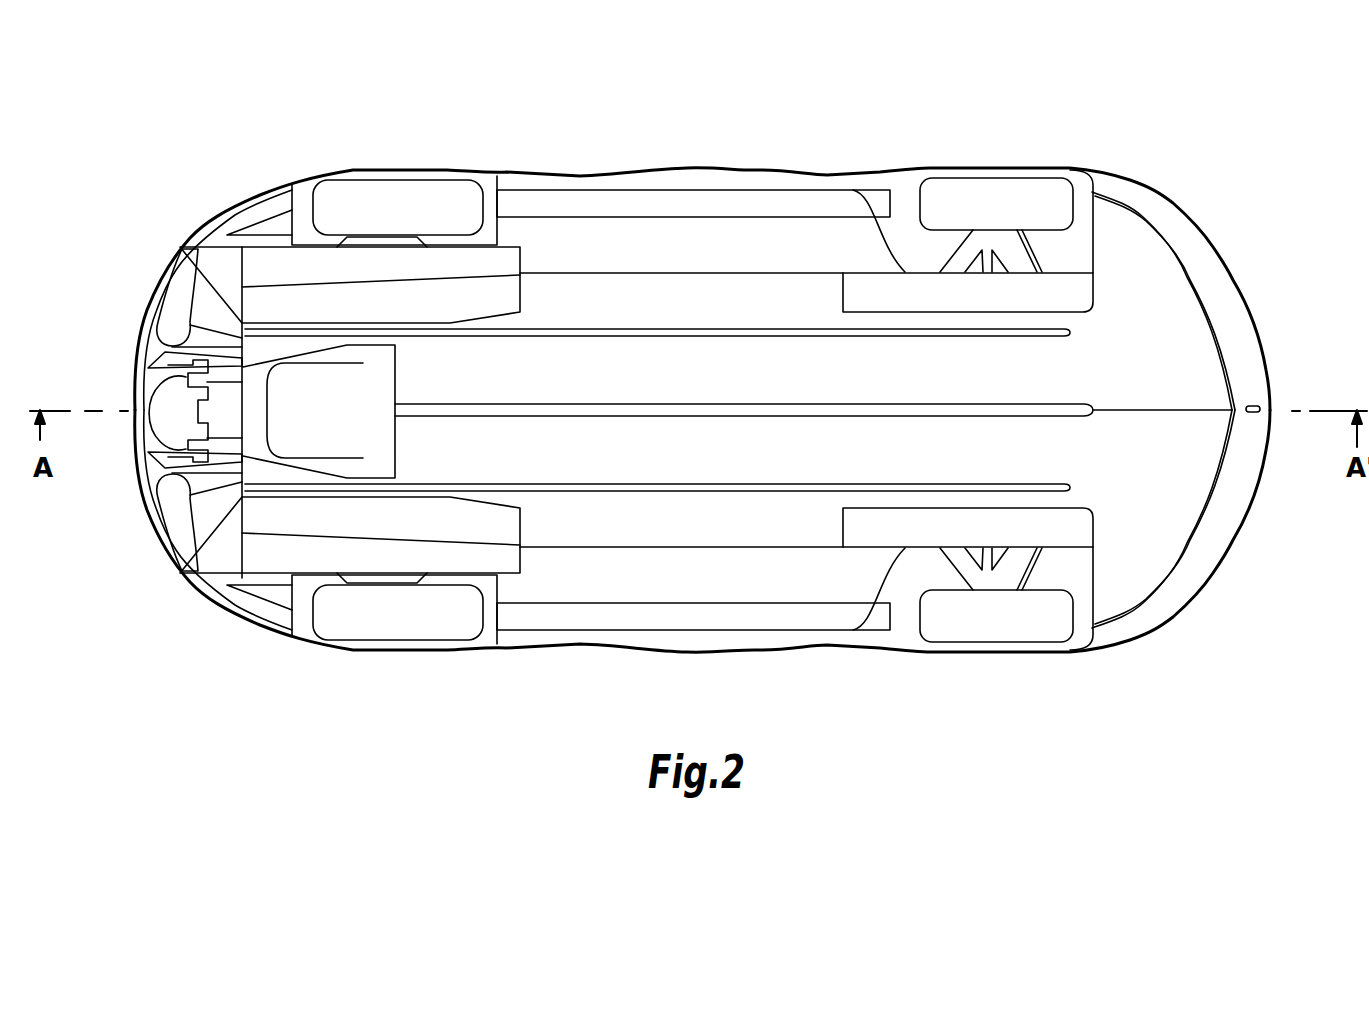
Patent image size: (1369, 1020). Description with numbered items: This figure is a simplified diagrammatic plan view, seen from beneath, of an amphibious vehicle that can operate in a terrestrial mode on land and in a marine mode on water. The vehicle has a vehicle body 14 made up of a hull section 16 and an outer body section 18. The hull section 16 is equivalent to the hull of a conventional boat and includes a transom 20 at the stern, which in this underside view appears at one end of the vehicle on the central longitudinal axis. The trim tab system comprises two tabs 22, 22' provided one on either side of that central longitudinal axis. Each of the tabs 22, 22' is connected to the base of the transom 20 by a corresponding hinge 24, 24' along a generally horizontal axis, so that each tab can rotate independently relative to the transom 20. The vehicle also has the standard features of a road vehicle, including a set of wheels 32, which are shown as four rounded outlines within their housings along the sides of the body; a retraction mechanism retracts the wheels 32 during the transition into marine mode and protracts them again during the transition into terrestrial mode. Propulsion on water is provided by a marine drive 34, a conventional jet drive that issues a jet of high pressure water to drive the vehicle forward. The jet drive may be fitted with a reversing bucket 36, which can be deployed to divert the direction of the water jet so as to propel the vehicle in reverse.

The vehicle body 14 is at (567, 177).
The hull section 16 is at (718, 297).
The outer body section 18 is at (143, 300).
The transom 20 is at (236, 446).
The tab 22 is at (161, 526).
The tab 22' is at (174, 269).
The hinge 24 is at (332, 588).
The hinge 24' is at (333, 360).
The wheels 32 is at (391, 200).
The marine drive 34 is at (197, 412).
The reversing bucket 36 is at (152, 400).